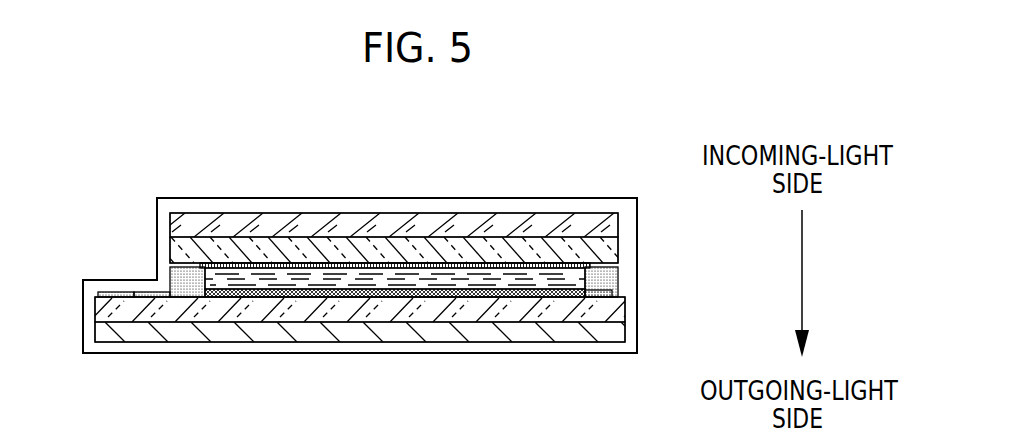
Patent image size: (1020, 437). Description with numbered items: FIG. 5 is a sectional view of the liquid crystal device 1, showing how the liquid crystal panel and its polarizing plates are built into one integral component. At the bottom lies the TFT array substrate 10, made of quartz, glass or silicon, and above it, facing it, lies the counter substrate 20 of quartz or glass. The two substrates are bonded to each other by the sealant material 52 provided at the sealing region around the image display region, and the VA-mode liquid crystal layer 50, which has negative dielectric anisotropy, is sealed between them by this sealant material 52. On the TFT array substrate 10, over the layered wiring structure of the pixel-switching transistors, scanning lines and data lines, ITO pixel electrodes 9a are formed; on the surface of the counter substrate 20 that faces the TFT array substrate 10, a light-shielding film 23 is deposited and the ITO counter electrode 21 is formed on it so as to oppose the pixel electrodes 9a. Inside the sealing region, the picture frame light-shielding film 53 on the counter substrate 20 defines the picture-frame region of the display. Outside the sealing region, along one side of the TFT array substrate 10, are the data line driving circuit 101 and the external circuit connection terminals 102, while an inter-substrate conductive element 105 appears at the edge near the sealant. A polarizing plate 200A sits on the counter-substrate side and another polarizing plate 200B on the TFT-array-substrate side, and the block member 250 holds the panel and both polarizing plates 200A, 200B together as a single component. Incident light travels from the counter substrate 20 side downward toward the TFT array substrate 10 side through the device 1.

The liquid crystal device 1 is at (611, 170).
The pixel electrodes 9a is at (253, 297).
The TFT array substrate 10 is at (619, 313).
The counter substrate 20 is at (610, 250).
The counter electrode 21 is at (452, 257).
The light-shielding film 23 is at (363, 263).
The liquid crystal layer 50 is at (347, 289).
The sealant material 52 is at (175, 271).
The picture frame light-shielding film 53 is at (218, 266).
The data line driving circuit 101 is at (147, 293).
The external circuit connection terminals 102 is at (113, 290).
The inter-substrate conduction material 105 is at (609, 293).
The polarizing plate 200A is at (263, 221).
The polarizing plate 200B is at (483, 335).
The block member 250 is at (608, 349).